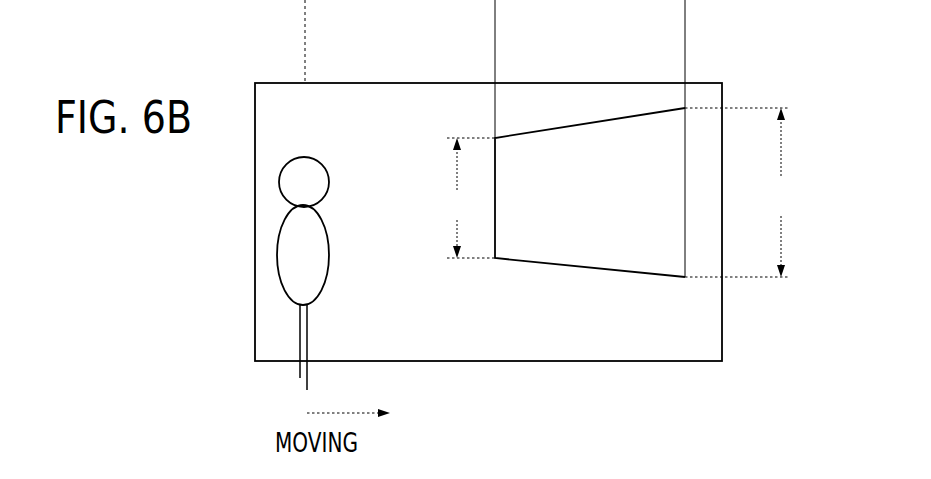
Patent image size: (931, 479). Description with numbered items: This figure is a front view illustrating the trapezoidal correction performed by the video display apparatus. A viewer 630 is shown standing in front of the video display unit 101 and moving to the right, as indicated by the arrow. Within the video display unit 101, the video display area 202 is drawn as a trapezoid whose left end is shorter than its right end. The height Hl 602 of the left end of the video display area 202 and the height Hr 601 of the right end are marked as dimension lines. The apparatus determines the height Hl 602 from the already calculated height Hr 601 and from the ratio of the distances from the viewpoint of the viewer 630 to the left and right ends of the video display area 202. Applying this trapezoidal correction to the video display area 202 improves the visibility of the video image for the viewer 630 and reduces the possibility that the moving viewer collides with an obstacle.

The video display unit 101 is at (700, 83).
The video display area 202 is at (585, 268).
The height Hr 601 is at (798, 197).
The height Hl 602 is at (440, 205).
The viewer 630 is at (330, 270).